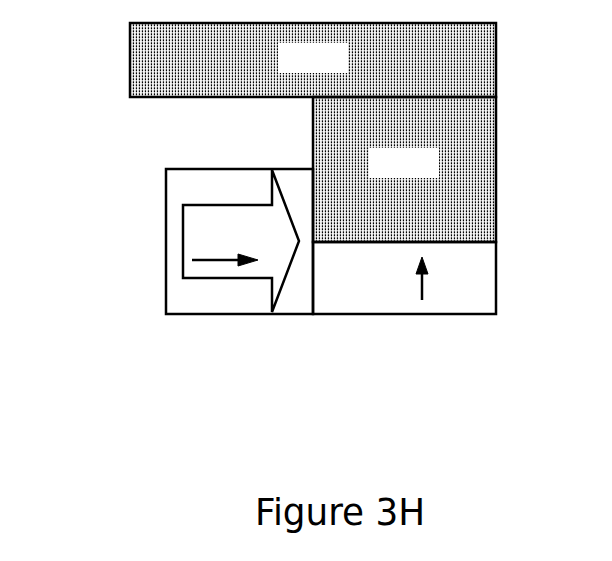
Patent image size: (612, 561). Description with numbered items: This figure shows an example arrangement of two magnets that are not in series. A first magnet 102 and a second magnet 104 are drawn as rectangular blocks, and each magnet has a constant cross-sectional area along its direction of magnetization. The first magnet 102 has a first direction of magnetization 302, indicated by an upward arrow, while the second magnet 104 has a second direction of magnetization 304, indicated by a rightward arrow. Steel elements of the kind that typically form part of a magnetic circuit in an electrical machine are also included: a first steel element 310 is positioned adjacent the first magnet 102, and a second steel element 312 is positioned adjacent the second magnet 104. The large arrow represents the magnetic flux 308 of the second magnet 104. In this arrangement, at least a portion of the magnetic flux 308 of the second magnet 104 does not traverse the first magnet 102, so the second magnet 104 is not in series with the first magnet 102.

The first steel element 310 is at (130, 62).
The second steel element 312 is at (496, 147).
The first magnet 102 is at (496, 263).
The first direction of magnetization 302 is at (422, 290).
The second magnet 104 is at (166, 292).
The magnetic flux 308 is at (205, 205).
The second direction of magnetization 304 is at (222, 262).